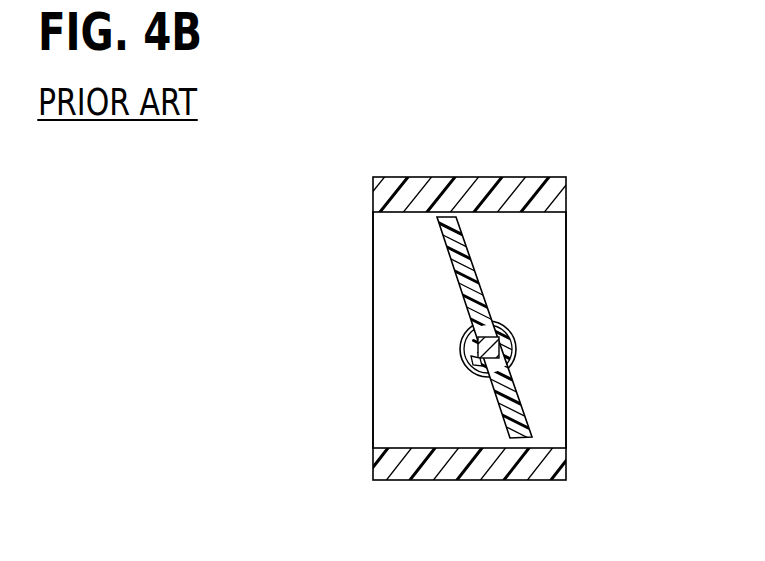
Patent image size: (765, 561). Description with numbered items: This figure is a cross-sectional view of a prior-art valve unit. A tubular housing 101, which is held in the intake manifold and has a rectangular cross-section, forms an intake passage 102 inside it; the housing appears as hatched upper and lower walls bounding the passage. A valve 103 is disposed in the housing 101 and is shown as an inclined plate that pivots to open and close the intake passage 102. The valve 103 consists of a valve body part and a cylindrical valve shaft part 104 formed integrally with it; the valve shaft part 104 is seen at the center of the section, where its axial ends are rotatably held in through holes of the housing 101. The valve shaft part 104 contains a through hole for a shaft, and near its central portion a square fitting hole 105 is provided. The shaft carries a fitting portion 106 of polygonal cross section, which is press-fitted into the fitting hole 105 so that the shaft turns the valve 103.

The tubular housing 101 is at (405, 178).
The intake passage 102 is at (543, 303).
The valve 103 is at (468, 261).
The valve shaft part 104 is at (518, 343).
The fitting hole 105 is at (486, 368).
The fitting portion 106 is at (518, 357).